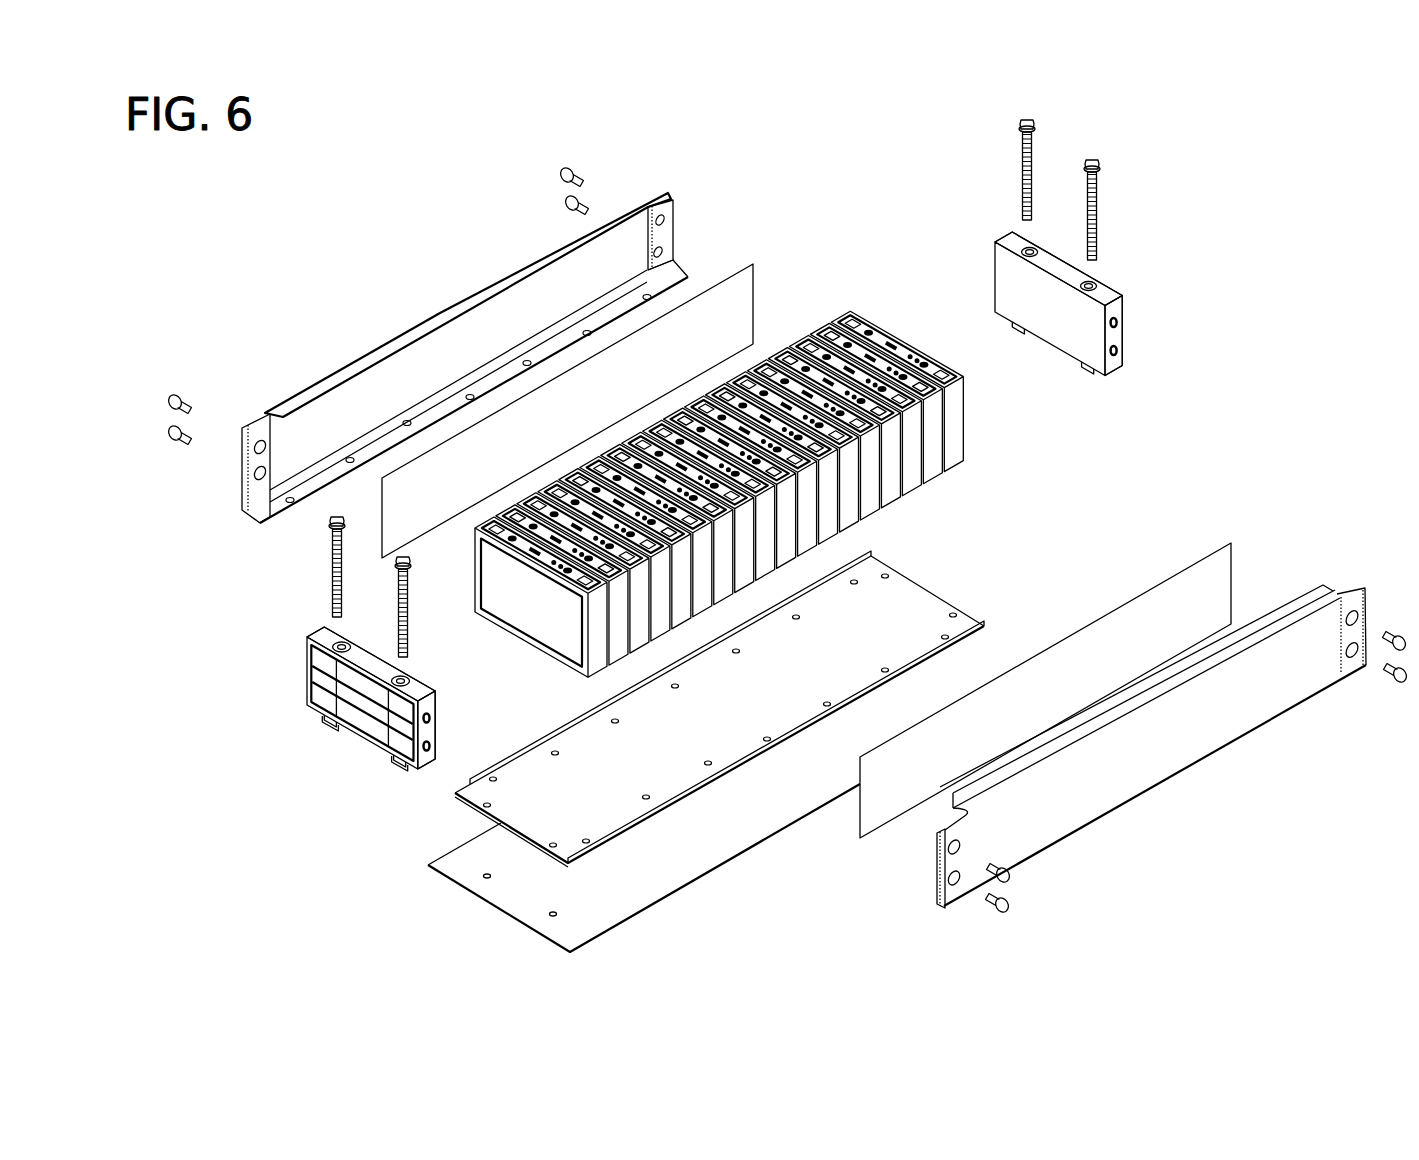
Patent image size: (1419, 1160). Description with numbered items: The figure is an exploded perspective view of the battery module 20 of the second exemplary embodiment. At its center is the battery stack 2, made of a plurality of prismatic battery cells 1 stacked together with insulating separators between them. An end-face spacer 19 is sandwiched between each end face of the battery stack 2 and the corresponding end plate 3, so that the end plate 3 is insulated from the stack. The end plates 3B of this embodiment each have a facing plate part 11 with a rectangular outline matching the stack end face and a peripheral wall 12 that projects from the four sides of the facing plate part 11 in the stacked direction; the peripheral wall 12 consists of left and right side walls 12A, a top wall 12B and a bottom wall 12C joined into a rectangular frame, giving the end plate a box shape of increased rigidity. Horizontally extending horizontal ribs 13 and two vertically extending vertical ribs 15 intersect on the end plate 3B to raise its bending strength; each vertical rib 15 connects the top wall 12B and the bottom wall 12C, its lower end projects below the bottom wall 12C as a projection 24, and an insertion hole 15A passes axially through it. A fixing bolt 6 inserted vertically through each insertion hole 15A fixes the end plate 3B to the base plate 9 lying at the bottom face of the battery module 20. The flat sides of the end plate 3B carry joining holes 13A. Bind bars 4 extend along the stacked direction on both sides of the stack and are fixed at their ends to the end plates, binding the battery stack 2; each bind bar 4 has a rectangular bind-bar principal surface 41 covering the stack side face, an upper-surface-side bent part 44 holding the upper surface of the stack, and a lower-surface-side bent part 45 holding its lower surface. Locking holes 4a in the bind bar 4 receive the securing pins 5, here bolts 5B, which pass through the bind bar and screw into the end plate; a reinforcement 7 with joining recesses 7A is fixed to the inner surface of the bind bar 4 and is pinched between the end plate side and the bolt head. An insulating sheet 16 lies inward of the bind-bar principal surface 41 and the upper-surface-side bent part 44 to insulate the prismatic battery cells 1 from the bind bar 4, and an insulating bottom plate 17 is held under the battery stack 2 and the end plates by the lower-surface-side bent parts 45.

The battery module 20 is at (316, 204).
The battery stack 2 is at (818, 296).
The prismatic battery cell 1 is at (880, 330).
The end-face spacer 19 is at (485, 573).
The insulating sheet 16 is at (742, 302).
The bottom plate 17 is at (668, 770).
The base plate 9 is at (510, 893).
The bind bar 4 is at (775, 530).
The bind-bar principal surface 41 is at (510, 305).
The upper-surface-side bent part 44 is at (540, 262).
The lower-surface-side bent part 45 is at (495, 378).
The reinforcement 7 is at (242, 462).
The joining recess 7A is at (258, 445).
The locking hole 4a is at (1350, 603).
The securing pin 5 is at (787, 531).
The bolt 5B is at (560, 168).
The peripheral wall 12 is at (217, 628).
The end plate 3 is at (1129, 289).
The end plate 3B is at (1118, 242).
The facing plate part 11 is at (1052, 315).
The side wall 12A is at (1118, 325).
The top wall 12B is at (1055, 265).
The bottom wall 12C is at (353, 740).
The horizontal rib 13 is at (380, 680).
The joining hole 13A is at (1126, 358).
The vertical rib 15 is at (345, 655).
The insertion hole 15A is at (1022, 240).
The projection 24 is at (393, 767).
The fixing bolt 6 is at (1100, 220).